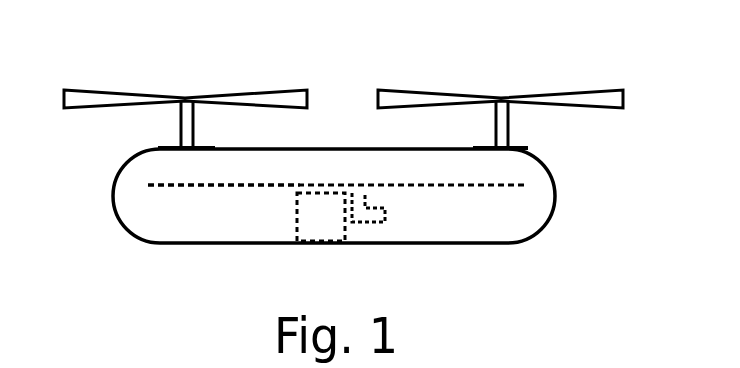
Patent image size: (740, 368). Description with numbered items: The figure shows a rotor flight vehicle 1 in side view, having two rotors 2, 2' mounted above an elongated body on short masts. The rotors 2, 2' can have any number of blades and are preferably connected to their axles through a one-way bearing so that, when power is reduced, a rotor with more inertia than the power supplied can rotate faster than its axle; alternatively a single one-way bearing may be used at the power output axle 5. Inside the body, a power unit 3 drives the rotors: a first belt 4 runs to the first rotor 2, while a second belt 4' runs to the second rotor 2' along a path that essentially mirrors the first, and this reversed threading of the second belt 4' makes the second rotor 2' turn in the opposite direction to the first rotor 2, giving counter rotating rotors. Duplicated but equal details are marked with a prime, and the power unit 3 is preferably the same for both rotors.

The rotor flight vehicle 1 is at (334, 161).
The rotor 2 is at (494, 97).
The rotor 2' is at (176, 97).
The power unit 3 is at (321, 217).
The first belt 4 is at (337, 253).
The second belt 4' is at (224, 248).
The power output axle 5 is at (373, 213).